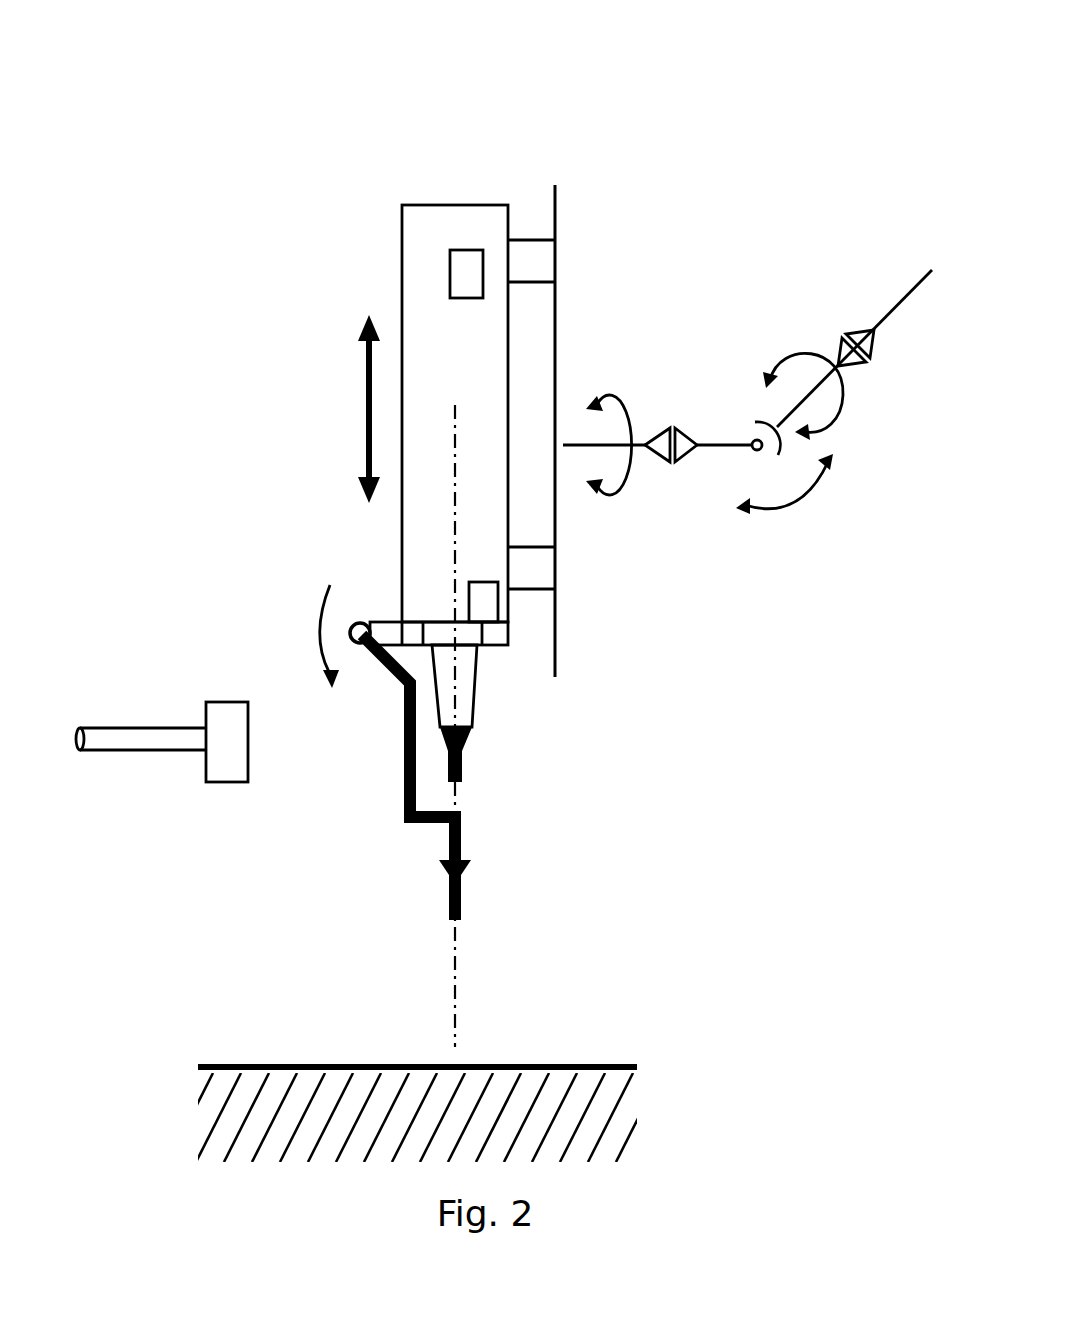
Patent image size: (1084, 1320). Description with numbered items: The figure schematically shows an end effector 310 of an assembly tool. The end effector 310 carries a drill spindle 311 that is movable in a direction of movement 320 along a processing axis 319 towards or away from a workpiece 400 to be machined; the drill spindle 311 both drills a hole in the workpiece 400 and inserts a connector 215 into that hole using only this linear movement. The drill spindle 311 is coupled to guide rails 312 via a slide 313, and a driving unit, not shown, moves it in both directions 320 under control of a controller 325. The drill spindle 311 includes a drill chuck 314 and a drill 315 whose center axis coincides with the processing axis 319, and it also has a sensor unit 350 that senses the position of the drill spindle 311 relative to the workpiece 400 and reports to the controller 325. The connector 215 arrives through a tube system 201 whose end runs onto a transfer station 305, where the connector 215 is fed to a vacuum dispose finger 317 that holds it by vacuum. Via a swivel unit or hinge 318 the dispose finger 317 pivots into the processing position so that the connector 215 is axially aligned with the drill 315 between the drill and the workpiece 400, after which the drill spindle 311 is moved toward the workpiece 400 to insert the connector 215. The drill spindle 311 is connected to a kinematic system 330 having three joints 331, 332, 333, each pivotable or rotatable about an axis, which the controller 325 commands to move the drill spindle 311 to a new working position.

The end effector 310 is at (304, 118).
The drill spindle 311 is at (402, 298).
The guide rails 312 is at (563, 348).
The slide 313 is at (527, 238).
The drill chuck 314 is at (475, 707).
The drill 315 is at (462, 758).
The vacuum dispose finger 317 is at (400, 775).
The swivel unit or hinge 318 is at (310, 633).
The processing axis 319 is at (452, 537).
The direction of movement 320 is at (363, 388).
The controller 325 is at (462, 255).
The kinematic system 330 is at (797, 548).
The joint 331 is at (890, 378).
The joint 332 is at (742, 388).
The joint 333 is at (678, 493).
The sensor unit 350 is at (485, 602).
The transfer station 305 is at (232, 713).
The tube system 201 is at (137, 738).
The connector 215 is at (462, 913).
The workpiece 400 is at (613, 1067).